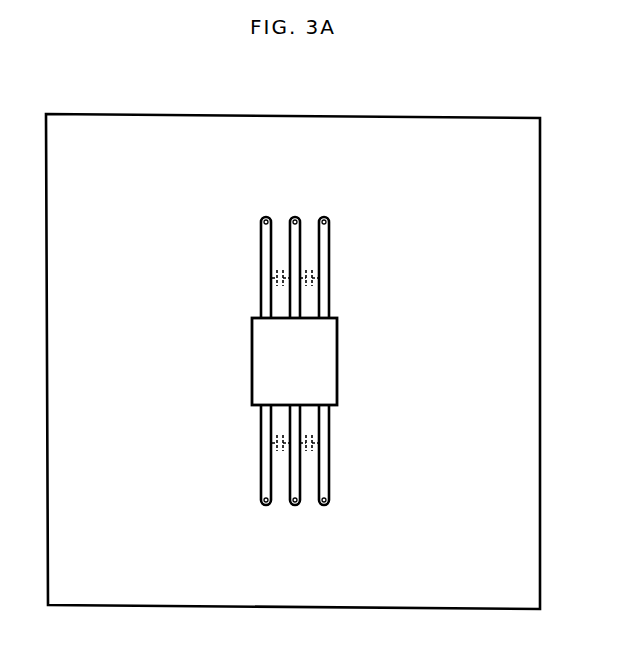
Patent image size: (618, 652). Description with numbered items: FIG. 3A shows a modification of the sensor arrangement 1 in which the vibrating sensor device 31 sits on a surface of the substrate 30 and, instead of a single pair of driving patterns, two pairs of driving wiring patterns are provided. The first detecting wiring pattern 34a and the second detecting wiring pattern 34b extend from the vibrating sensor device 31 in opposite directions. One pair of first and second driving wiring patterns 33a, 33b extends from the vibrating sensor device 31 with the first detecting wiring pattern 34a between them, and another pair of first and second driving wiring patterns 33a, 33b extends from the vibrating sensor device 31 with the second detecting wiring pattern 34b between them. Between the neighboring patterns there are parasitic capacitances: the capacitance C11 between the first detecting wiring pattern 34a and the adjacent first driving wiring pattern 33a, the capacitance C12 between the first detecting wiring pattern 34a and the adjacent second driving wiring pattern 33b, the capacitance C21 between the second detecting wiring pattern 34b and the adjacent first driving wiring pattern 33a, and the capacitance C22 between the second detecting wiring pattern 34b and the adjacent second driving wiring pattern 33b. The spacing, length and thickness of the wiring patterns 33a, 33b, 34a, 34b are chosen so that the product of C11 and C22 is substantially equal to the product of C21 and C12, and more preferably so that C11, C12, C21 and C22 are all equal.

The semiconductor device / package 1 is at (521, 91).
The substrate 30 is at (532, 333).
The vibrating sensor device 31 is at (320, 362).
The first driving wiring pattern 33a is at (261, 248).
The second driving wiring pattern 33b is at (329, 248).
The first detecting wiring pattern 34a is at (300, 235).
The second detecting wiring pattern 34b is at (296, 482).
The capacitance between first detecting wiring pattern and adjacent first driving wi C11 is at (262, 285).
The capacitance between first detecting wiring pattern and adjacent second driving w C12 is at (330, 285).
The capacitance between second detecting wiring pattern and adjacent first driving w C21 is at (262, 437).
The capacitance between second detecting wiring pattern and adjacent second driving C22 is at (330, 437).